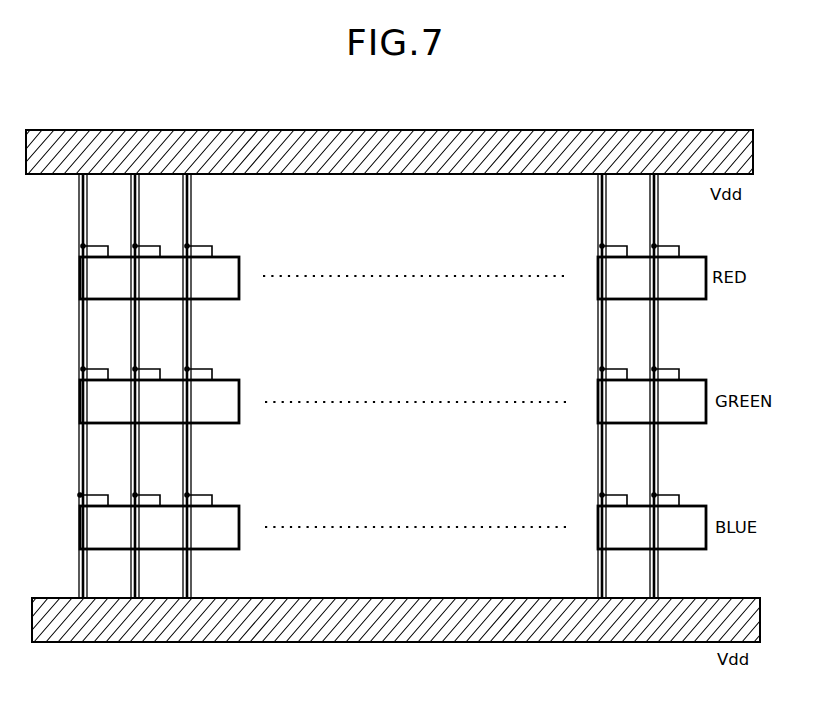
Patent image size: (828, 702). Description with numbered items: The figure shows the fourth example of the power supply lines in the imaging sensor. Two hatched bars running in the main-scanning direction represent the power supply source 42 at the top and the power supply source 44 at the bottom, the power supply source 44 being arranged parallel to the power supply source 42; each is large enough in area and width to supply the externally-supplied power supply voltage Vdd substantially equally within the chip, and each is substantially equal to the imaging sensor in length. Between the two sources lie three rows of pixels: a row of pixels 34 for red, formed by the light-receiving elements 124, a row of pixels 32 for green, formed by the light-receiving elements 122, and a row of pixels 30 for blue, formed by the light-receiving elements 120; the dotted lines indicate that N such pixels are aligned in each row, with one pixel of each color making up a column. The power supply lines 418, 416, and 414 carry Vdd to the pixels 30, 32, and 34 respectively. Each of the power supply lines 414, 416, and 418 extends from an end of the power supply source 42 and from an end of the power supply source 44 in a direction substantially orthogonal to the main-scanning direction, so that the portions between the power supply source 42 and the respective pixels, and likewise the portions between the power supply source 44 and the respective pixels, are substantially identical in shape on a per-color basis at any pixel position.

The power supply source 42 is at (388, 117).
The power supply source 44 is at (392, 643).
The pixels for R 34 is at (690, 257).
The light-receiving element for R 124 is at (679, 266).
The pixels for G 32 is at (694, 381).
The light-receiving element for G 122 is at (681, 390).
The pixels for B 30 is at (694, 506).
The light-receiving element for B 120 is at (681, 516).
The power supply line 414 is at (218, 339).
The power supply line 416 is at (138, 482).
The power supply line 418 is at (82, 593).